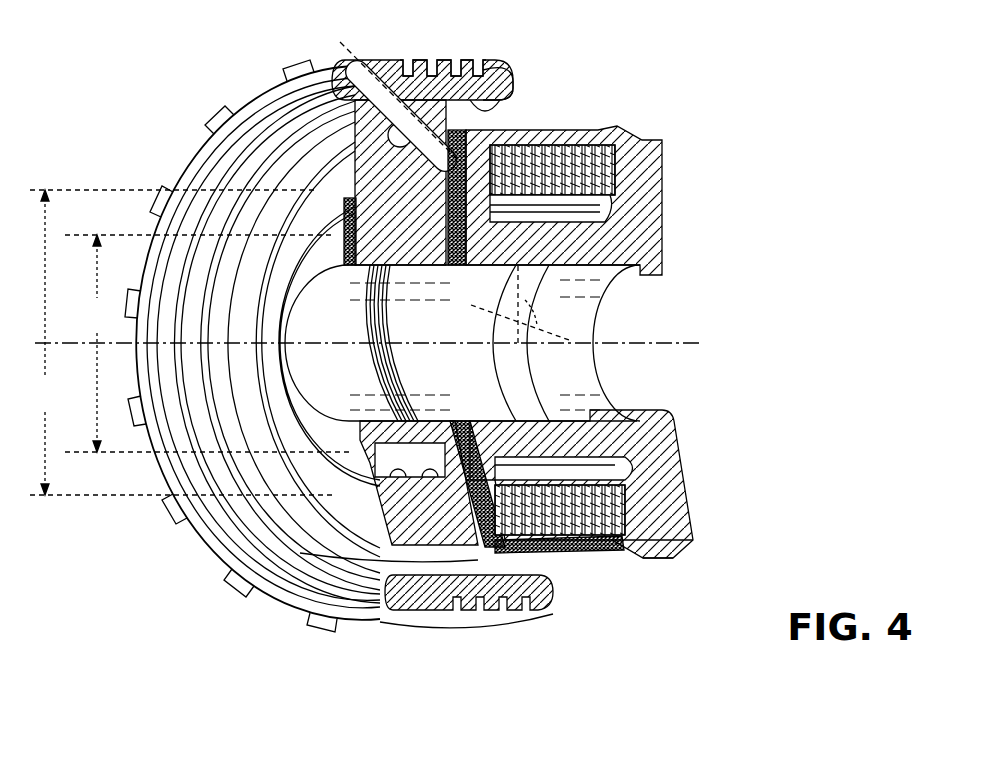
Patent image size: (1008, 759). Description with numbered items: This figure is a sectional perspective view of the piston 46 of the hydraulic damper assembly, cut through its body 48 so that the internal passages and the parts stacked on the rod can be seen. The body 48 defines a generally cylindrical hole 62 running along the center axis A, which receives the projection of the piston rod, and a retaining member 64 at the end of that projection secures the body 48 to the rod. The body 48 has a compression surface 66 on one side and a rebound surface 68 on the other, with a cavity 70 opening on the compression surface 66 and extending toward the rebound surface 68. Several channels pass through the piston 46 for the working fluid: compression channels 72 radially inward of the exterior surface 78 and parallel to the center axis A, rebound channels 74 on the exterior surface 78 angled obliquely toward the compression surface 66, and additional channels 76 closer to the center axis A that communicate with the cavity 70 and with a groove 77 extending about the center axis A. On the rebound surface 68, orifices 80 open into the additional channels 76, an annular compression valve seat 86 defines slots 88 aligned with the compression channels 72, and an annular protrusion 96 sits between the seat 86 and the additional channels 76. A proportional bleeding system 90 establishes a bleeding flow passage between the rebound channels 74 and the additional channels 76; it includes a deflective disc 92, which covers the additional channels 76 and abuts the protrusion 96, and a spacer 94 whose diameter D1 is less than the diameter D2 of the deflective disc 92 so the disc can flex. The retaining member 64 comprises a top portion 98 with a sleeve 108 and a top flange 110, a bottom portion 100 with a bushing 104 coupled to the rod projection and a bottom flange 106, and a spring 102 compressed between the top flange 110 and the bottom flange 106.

The piston 46 is at (305, 63).
The body 48 is at (462, 75).
The hole 62 is at (545, 540).
The retaining member 64 is at (655, 560).
The compression surface 66 is at (505, 92).
The rebound surface 68 is at (300, 605).
The cavity 70 is at (497, 85).
The compression channel 72 is at (472, 578).
The rebound channel 74 is at (412, 162).
The additional channel 76 is at (450, 445).
The groove 77 is at (455, 540).
The exterior surface 78 is at (422, 60).
The orifice 80 is at (415, 425).
The compression valve seat 86 is at (335, 545).
The slot 88 is at (290, 150).
The proportional bleeding system 90 is at (290, 378).
The deflective disc 92 is at (310, 215).
The spacer 94 is at (338, 425).
The protrusion 96 is at (362, 220).
The top portion 98 is at (552, 165).
The bottom portion 100 is at (648, 452).
The spring 102 is at (608, 150).
The bushing 104 is at (560, 432).
The bottom flange 106 is at (680, 500).
The sleeve 108 is at (620, 205).
The top flange 110 is at (515, 552).
The center axis A is at (652, 343).
The diameter of the spacer D1 is at (207, 343).
The diameter of the deflective disc D2 is at (182, 342).